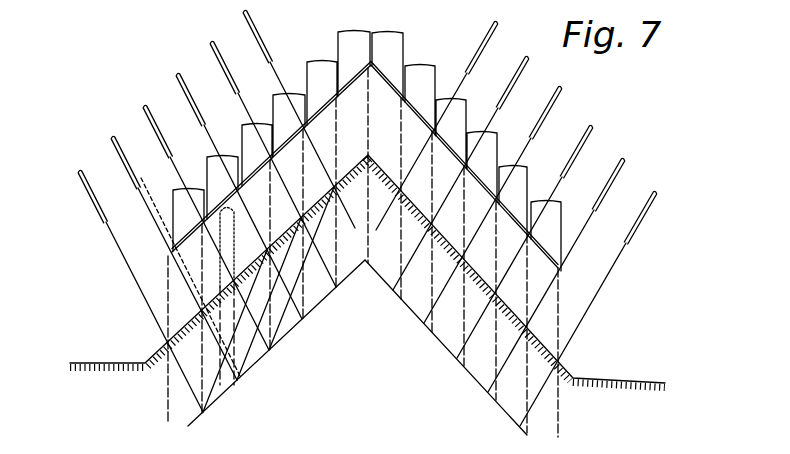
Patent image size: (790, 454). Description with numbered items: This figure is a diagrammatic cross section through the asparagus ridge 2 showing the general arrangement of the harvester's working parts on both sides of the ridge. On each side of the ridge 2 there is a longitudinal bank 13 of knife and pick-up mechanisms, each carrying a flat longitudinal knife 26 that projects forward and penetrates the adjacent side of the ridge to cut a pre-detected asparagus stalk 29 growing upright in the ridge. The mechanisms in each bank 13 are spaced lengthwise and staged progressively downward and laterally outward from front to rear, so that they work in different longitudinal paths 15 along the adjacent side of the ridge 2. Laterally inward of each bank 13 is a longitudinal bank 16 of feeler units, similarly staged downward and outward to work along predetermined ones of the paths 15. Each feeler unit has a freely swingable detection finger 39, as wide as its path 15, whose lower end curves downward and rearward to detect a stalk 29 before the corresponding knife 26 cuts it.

The asparagus ridge 2 is at (537, 337).
The longitudinal bank of knife and pick-up mechanisms 13 is at (264, 27).
The longitudinal paths 15 is at (342, 275).
The longitudinal bank of feeler units 16 is at (168, 222).
The knife 26 is at (81, 172).
The asparagus stalk 29 is at (222, 269).
The detection finger 39 is at (187, 200).